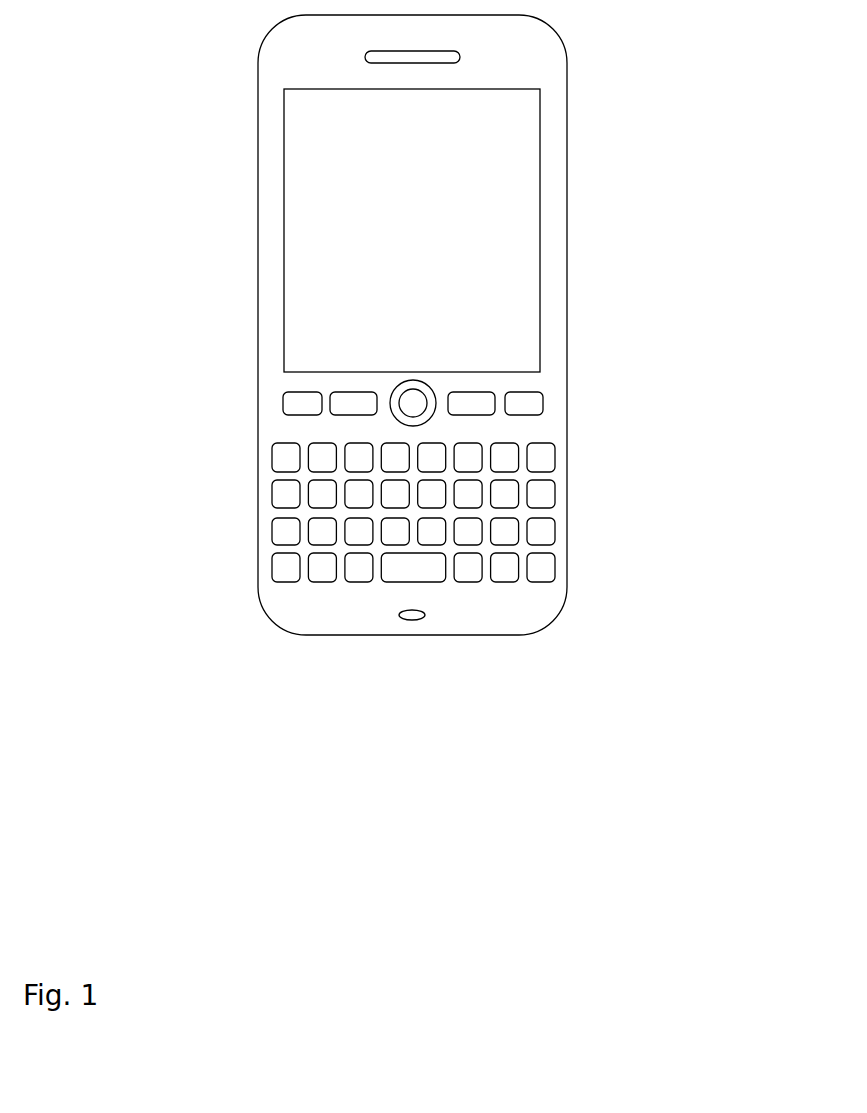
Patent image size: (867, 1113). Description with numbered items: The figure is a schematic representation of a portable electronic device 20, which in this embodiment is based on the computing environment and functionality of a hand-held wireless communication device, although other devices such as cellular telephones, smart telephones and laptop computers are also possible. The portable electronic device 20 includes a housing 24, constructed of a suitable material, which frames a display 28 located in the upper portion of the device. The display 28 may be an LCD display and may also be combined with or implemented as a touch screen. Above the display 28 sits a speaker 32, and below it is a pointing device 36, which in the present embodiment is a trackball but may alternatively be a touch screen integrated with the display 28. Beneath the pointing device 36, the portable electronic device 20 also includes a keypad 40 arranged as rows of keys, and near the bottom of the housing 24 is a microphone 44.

The portable electronic device 20 is at (257, 73).
The housing 24 is at (257, 173).
The display 28 is at (283, 231).
The speaker 32 is at (460, 57).
The pointing device 36 is at (413, 381).
The keypad 40 is at (557, 513).
The microphone 44 is at (425, 614).